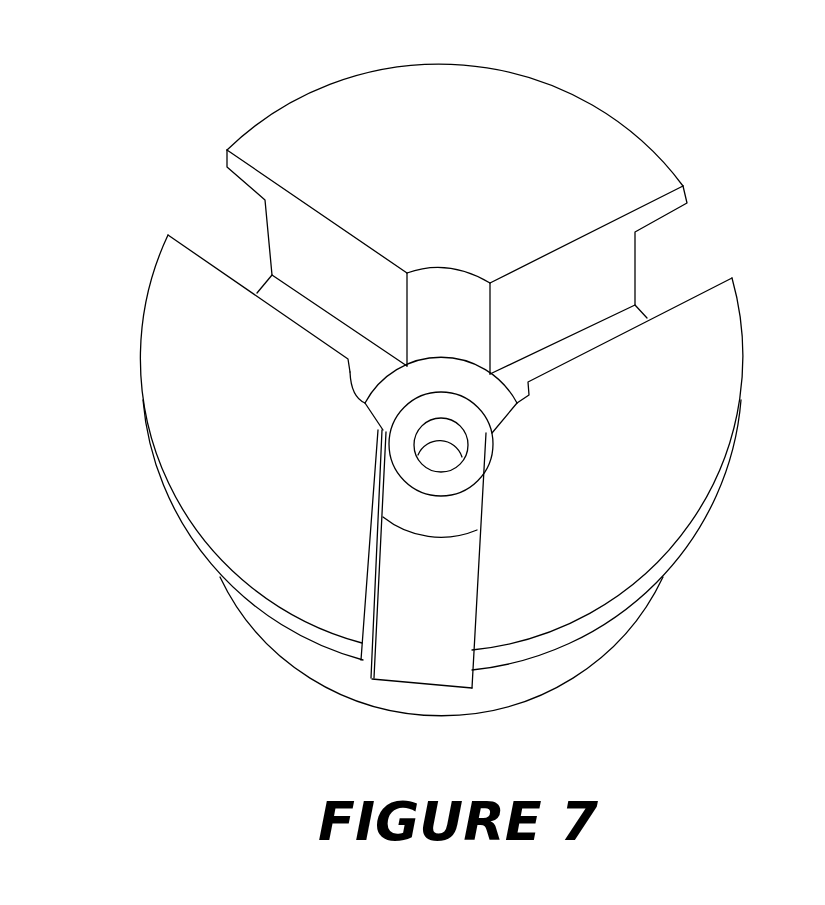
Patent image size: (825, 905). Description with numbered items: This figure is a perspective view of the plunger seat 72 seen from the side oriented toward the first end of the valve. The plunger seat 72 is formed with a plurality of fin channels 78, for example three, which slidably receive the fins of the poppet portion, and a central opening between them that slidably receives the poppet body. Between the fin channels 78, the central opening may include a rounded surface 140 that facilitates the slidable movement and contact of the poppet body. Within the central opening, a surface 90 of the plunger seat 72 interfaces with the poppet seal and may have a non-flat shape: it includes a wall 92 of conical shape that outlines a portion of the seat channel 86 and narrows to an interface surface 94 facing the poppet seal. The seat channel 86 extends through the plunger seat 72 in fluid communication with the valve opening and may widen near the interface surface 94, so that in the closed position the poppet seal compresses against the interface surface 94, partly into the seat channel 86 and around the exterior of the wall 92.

The plunger seat 72 is at (467, 381).
The rounded surface 140 is at (457, 202).
The surface 90 is at (476, 269).
The seat channel 86 is at (274, 471).
The interface surface 94 is at (266, 290).
The fin channels 78 is at (636, 307).
The wall 92 is at (423, 607).